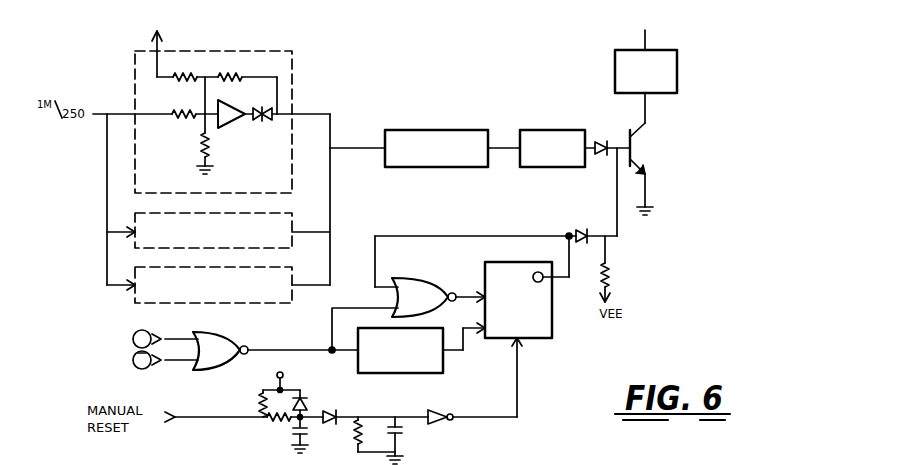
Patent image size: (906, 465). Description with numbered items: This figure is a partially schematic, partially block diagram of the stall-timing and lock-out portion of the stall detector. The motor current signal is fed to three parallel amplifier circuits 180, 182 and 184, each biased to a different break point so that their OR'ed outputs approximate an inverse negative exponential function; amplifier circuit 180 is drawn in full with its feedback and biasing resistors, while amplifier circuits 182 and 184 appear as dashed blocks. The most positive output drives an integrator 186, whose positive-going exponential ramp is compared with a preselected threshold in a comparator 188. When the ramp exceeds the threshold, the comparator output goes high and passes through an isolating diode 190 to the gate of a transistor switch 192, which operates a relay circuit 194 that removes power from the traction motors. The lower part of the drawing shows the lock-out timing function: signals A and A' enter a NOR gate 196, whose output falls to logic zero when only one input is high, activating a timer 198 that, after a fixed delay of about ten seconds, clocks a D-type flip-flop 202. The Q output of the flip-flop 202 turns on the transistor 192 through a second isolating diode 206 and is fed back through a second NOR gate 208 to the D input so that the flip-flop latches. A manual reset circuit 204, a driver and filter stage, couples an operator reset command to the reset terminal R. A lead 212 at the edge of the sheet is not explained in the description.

The amplifier circuit 180 is at (275, 50).
The amplifier circuit 182 is at (222, 211).
The amplifier circuit 184 is at (281, 304).
The integrator 186 is at (427, 130).
The comparator 188 is at (567, 130).
The isolating diode 190 is at (603, 141).
The transistor switch 192 is at (640, 147).
The relay circuit 194 is at (677, 65).
The NOR gate 196 is at (232, 374).
The timer 198 is at (417, 373).
The D-type flip-flop 202 is at (552, 320).
The manual reset circuit 204 is at (270, 452).
The isolating diode 206 is at (585, 228).
The NOR gate 208 is at (408, 276).
The lead 212 is at (597, 464).